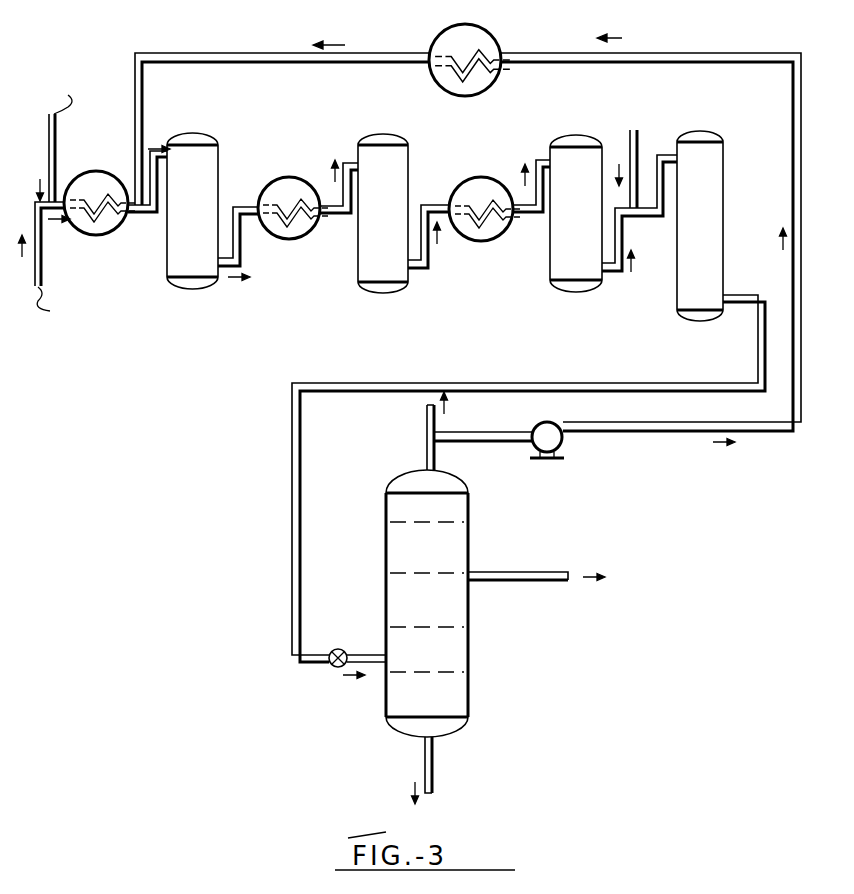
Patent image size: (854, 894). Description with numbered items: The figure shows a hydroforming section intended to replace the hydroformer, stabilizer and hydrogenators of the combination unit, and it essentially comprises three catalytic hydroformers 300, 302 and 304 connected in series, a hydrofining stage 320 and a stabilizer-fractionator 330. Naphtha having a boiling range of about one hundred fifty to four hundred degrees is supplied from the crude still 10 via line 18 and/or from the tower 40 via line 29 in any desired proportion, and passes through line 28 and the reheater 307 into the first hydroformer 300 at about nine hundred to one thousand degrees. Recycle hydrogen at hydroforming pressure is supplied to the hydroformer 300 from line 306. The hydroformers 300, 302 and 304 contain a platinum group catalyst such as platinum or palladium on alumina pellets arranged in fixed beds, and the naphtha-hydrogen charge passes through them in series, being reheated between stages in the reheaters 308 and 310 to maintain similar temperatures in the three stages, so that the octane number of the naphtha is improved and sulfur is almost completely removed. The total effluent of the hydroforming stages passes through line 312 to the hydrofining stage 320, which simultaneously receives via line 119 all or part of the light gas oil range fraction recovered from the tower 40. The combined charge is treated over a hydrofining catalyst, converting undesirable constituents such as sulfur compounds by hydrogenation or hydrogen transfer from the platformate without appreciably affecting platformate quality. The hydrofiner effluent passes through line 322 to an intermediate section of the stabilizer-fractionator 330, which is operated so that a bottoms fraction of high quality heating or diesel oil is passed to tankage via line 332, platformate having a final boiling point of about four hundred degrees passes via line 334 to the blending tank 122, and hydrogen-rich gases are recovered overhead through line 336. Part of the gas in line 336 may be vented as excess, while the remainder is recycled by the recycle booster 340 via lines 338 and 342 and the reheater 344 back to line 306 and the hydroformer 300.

The line 29 is at (50, 148).
The tower 40 is at (69, 89).
The line 18 is at (42, 264).
The crude still 10 is at (115, 311).
The reheater 307 is at (74, 172).
The line 28 is at (149, 197).
The line 306 is at (267, 50).
The reheater 344 is at (495, 51).
The line 342 is at (687, 58).
The hydroformer 300 is at (221, 150).
The reheater 308 is at (296, 236).
The hydroformer 302 is at (410, 152).
The reheater 310 is at (481, 239).
The hydroformer 304 is at (549, 153).
The line 312 is at (639, 213).
The line 119 is at (639, 128).
The hydrofining stage 320 is at (725, 162).
The line 322 is at (756, 356).
The line 336 is at (425, 424).
The line 338 is at (483, 426).
The recycle booster 340 is at (562, 440).
The stabilizer-fractionator 330 is at (471, 510).
The line 334 is at (547, 570).
The blending tank 122 is at (654, 579).
The line 332 is at (434, 766).